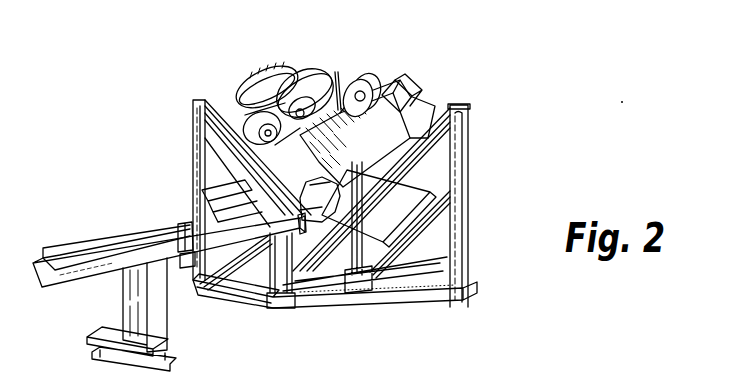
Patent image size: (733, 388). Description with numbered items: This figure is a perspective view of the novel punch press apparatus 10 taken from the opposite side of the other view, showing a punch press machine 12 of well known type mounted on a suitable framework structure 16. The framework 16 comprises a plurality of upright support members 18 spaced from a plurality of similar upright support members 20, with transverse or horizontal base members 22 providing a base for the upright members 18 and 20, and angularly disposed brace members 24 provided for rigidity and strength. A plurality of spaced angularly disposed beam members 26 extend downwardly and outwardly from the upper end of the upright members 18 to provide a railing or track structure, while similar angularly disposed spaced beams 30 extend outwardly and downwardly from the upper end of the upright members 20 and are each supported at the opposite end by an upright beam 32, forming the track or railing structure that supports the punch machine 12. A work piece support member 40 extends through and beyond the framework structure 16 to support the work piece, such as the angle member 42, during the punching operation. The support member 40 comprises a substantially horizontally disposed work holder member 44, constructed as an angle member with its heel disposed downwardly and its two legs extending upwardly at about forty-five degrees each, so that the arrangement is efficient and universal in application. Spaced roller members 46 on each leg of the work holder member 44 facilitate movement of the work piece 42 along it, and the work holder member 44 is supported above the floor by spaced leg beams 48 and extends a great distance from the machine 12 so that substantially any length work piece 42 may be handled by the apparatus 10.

The punch press apparatus 10 is at (176, 176).
The punch press machine 12 is at (397, 140).
The framework structure 16 is at (473, 172).
The upright support member 18 is at (196, 130).
The upright support member 20 is at (458, 125).
The base member 22 is at (268, 298).
The brace member 24 is at (258, 265).
The angularly disposed beam member 26 is at (222, 101).
The angularly disposed beam 30 is at (450, 110).
The upright beam 32 is at (357, 268).
The work piece support member 40 is at (92, 272).
The angle member 42 is at (86, 246).
The work holder member 44 is at (185, 266).
The roller member 46 is at (187, 236).
The leg beam 48 is at (158, 334).